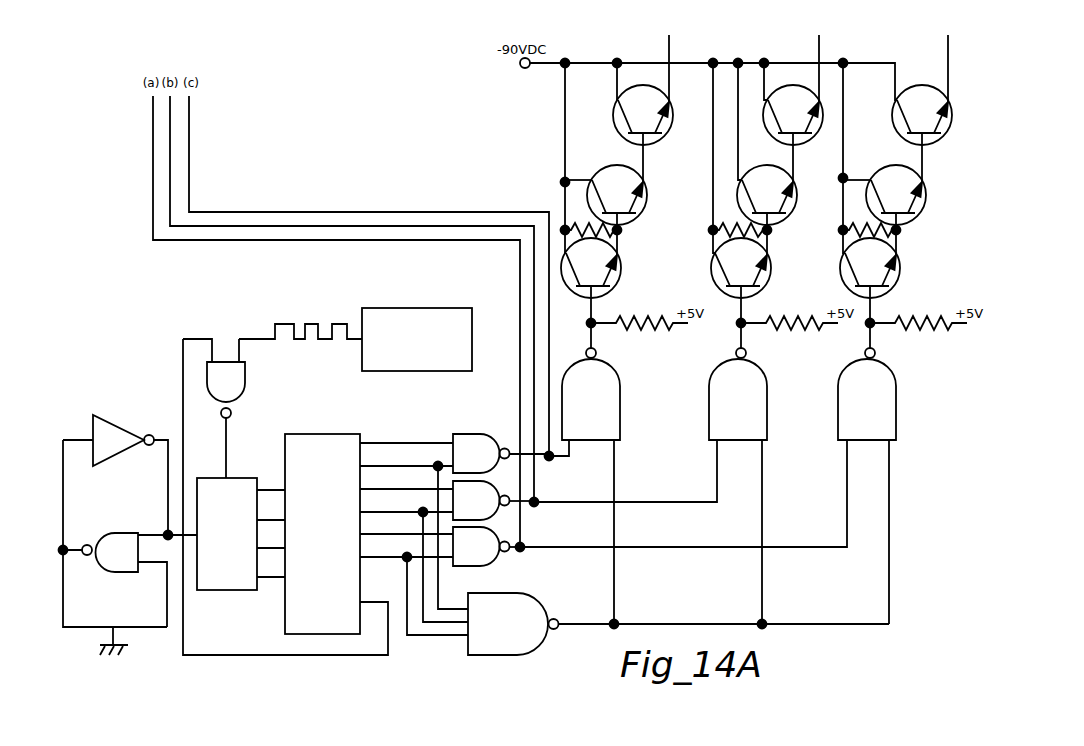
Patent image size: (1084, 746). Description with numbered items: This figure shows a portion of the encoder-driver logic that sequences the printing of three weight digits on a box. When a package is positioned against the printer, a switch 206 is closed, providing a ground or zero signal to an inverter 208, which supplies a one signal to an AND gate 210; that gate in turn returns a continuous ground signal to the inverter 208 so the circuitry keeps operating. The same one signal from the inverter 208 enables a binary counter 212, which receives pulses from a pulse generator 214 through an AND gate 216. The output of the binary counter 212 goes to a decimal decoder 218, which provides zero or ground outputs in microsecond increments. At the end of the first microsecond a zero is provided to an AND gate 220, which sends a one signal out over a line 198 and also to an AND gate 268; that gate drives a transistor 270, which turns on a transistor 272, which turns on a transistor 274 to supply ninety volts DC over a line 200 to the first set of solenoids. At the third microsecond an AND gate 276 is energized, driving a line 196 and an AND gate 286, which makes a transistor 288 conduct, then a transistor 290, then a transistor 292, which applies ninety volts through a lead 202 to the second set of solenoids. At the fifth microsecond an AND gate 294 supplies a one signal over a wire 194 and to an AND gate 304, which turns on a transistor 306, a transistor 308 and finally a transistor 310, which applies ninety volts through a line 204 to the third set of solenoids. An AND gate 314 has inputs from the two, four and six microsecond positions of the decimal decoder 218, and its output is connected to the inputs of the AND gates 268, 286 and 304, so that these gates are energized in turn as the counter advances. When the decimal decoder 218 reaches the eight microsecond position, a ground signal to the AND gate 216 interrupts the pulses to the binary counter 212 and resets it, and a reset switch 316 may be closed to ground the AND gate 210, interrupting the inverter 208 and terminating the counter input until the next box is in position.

The line 194 is at (153, 128).
The line 196 is at (170, 153).
The line 198 is at (189, 130).
The line 200 is at (668, 46).
The lead 202 is at (818, 48).
The line 204 is at (946, 52).
The switch 206 is at (57, 575).
The inverter 208 is at (100, 426).
The AND gate 210 is at (122, 536).
The binary counter 212 is at (216, 590).
The pulse generator 214 is at (432, 308).
The AND gate 216 is at (290, 375).
The decimal decoder 218 is at (320, 436).
The AND gate 220 is at (496, 448).
The AND gate 268 is at (622, 387).
The transistor 270 is at (616, 268).
The transistor 272 is at (640, 212).
The transistor 274 is at (660, 130).
The AND gate 276 is at (496, 510).
The AND gate 286 is at (768, 387).
The transistor 288 is at (766, 268).
The transistor 290 is at (790, 212).
The transistor 292 is at (812, 132).
The AND gate 294 is at (476, 568).
The AND gate 304 is at (898, 387).
The transistor 306 is at (895, 268).
The transistor 308 is at (958, 226).
The transistor 310 is at (944, 132).
The AND gate 314 is at (543, 595).
The reset switch 316 is at (184, 625).